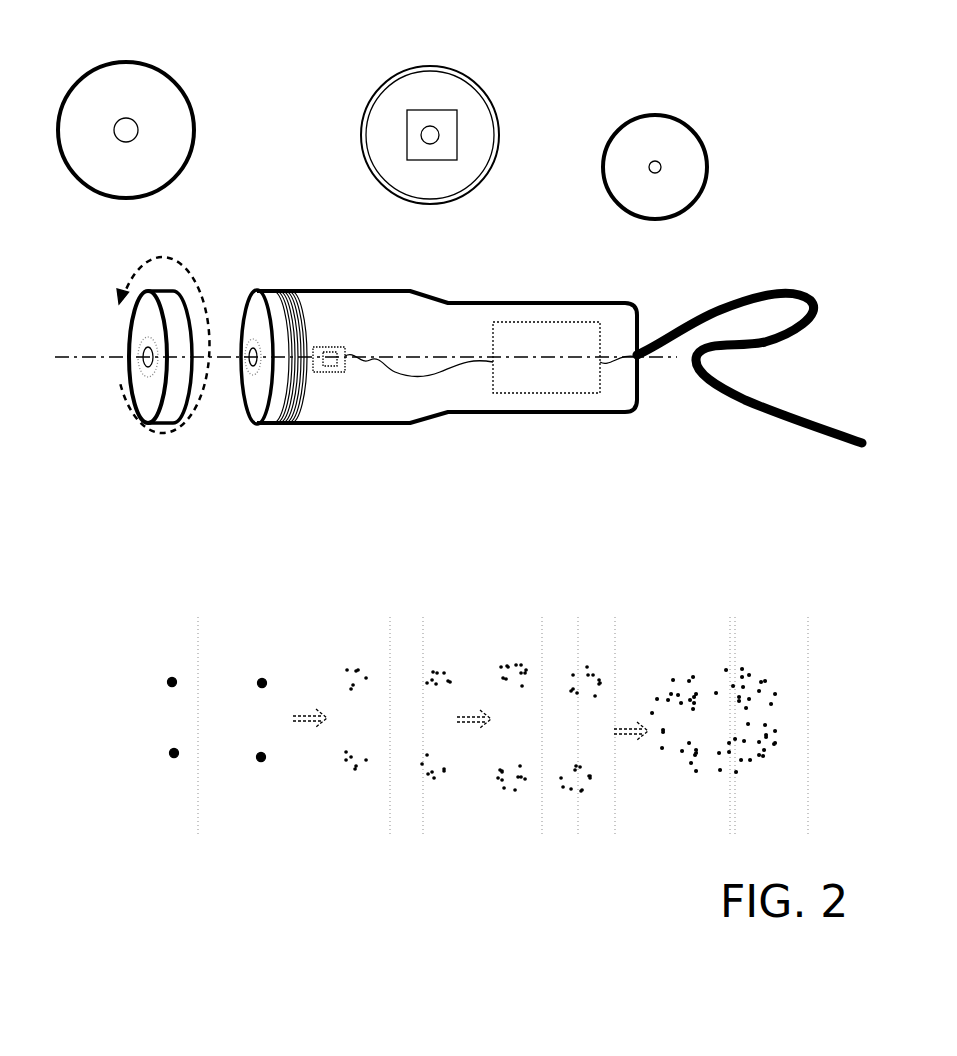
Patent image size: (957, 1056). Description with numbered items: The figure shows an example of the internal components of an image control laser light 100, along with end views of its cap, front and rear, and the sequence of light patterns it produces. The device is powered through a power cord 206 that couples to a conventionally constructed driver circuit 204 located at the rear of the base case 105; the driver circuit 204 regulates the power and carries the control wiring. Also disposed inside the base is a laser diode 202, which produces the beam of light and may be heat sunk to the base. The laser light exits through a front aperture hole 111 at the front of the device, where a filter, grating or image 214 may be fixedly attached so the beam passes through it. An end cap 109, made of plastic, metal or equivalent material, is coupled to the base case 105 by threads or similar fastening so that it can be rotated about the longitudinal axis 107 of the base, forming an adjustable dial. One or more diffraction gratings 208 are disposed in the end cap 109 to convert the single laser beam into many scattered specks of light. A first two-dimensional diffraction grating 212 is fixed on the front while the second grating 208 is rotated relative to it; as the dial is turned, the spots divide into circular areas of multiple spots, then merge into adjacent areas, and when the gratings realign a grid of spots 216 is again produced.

The image control laser light 100 is at (503, 704).
The base case 105 is at (350, 396).
The longitudinal axis 107 is at (362, 368).
The end cap 109 is at (175, 482).
The front aperture hole 111 is at (433, 143).
The laser diode 202 is at (396, 347).
The driver circuit 204 is at (565, 357).
The power cord 206 is at (765, 345).
The diffraction grating 208 is at (133, 330).
The first 2D diffraction grating 212 is at (187, 427).
The filter, grating, or image 214 is at (457, 135).
The grid of spots 216 is at (217, 754).